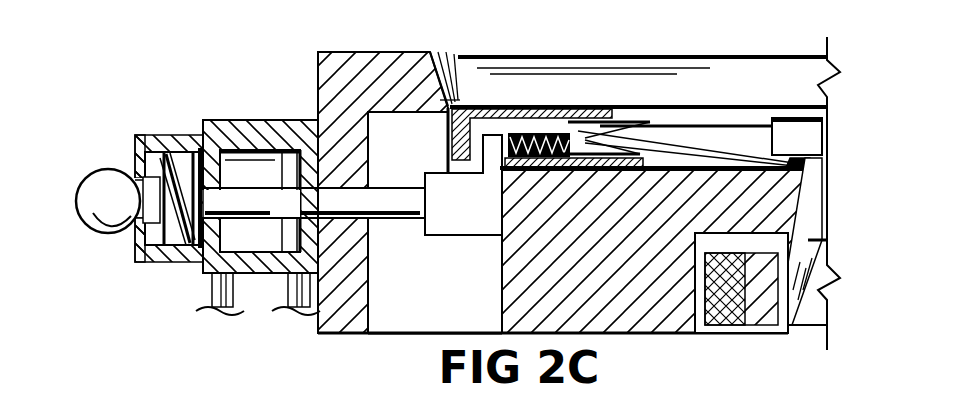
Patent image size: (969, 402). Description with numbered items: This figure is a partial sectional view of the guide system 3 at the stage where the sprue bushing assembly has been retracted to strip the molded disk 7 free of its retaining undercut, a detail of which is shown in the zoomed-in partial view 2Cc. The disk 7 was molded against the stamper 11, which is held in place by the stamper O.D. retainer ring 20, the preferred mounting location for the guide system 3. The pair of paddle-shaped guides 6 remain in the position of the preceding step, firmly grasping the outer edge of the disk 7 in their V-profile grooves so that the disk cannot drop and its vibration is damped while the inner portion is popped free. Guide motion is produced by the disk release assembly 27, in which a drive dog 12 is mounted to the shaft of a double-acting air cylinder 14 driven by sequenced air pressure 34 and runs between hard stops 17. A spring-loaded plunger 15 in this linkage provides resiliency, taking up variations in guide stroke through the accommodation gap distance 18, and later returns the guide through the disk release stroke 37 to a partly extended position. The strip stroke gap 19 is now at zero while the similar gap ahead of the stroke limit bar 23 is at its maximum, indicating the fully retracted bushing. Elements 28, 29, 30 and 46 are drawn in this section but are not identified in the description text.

The guide system 3 is at (396, 41).
The guides 6 is at (570, 88).
The disk 7 is at (672, 143).
The stamper 11 is at (648, 160).
The drive dog 12 is at (447, 215).
The double-acting air cylinder 14 is at (267, 132).
The spring-loaded plunger 15 is at (540, 110).
The hard stop 17 is at (502, 207).
The accommodation gap distance 18 is at (477, 70).
The strip stroke gap 19 is at (785, 335).
The stamper O.D. retainer ring 20 is at (510, 105).
The stroke limit bar 23 is at (728, 315).
The disk release assembly 27 is at (98, 278).
The return spring 28 is at (195, 148).
The spring housing 29 is at (152, 262).
The ball seat 30 is at (140, 173).
The sequenced air pressure 34 is at (222, 322).
The disk release stroke 37 is at (140, 260).
The retainer frame 46 is at (698, 337).
The zoomed-in partial view 2Cc is at (805, 118).